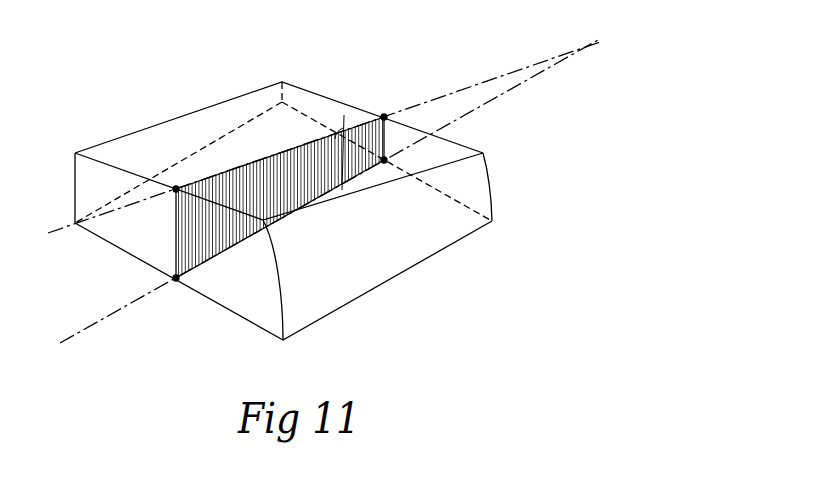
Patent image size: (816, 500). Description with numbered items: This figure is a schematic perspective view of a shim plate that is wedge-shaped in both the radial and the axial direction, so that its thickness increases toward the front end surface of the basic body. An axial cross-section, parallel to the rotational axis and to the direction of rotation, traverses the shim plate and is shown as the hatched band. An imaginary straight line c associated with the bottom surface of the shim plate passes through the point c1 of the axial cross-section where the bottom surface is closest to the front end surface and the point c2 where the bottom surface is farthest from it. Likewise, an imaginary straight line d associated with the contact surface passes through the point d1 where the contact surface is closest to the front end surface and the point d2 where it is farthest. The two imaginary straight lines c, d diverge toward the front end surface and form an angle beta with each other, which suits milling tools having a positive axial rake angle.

The imaginary straight line d is at (316, 145).
The point d1 is at (176, 189).
The point d2 is at (384, 117).
The imaginary straight line c is at (322, 202).
The point c1 is at (176, 278).
The point c2 is at (384, 160).